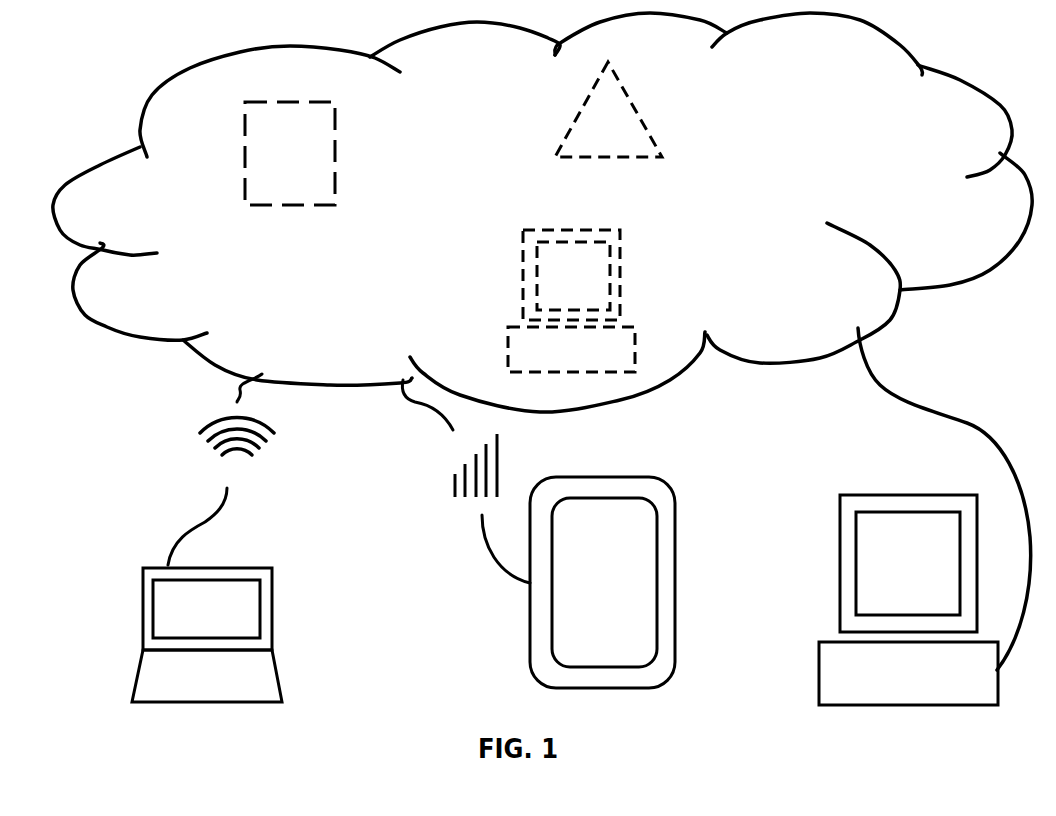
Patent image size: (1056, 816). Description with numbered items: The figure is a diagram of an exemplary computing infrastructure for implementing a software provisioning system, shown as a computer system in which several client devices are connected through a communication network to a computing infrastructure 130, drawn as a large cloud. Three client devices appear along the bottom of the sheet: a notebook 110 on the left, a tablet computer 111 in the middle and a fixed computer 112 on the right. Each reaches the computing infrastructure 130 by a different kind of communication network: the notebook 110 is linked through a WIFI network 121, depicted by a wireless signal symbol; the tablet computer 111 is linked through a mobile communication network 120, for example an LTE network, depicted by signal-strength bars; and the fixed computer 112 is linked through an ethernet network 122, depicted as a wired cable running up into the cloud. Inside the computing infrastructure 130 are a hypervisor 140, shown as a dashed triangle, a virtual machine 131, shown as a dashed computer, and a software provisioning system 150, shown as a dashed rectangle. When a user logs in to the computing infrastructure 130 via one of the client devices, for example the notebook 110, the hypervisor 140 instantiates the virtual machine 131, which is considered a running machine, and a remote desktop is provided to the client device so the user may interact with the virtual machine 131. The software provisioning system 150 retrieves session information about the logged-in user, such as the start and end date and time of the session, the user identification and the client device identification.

The computing infrastructure 130 is at (140, 147).
The software provisioning system 150 is at (333, 140).
The hypervisor 140 is at (637, 115).
The virtual machine 131 is at (620, 288).
The WIFI network 121 is at (197, 440).
The mobile communication network 120 is at (450, 487).
The ethernet network 122 is at (883, 398).
The notebook 110 is at (225, 692).
The tablet computer 111 is at (622, 616).
The fixed computer 112 is at (927, 684).